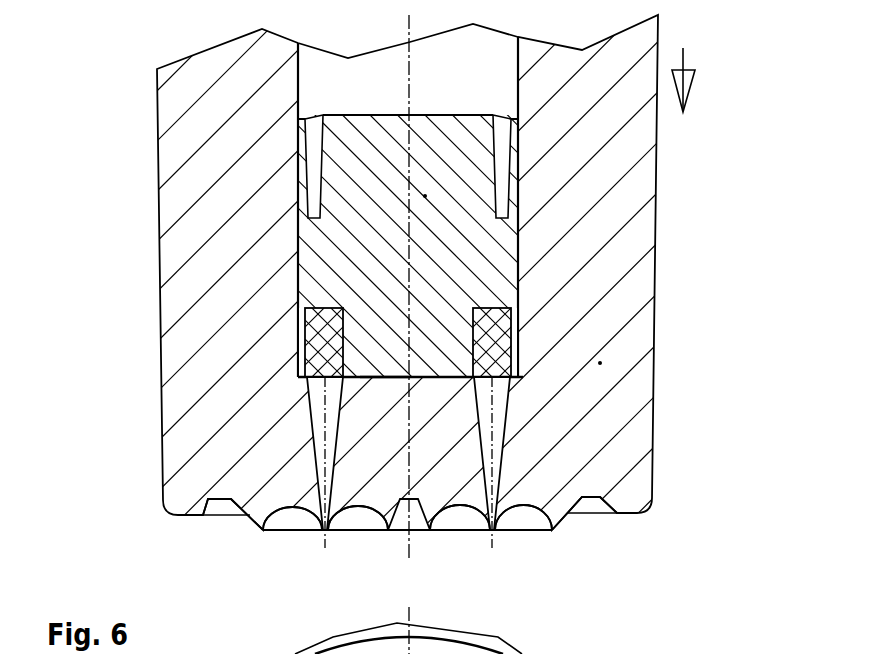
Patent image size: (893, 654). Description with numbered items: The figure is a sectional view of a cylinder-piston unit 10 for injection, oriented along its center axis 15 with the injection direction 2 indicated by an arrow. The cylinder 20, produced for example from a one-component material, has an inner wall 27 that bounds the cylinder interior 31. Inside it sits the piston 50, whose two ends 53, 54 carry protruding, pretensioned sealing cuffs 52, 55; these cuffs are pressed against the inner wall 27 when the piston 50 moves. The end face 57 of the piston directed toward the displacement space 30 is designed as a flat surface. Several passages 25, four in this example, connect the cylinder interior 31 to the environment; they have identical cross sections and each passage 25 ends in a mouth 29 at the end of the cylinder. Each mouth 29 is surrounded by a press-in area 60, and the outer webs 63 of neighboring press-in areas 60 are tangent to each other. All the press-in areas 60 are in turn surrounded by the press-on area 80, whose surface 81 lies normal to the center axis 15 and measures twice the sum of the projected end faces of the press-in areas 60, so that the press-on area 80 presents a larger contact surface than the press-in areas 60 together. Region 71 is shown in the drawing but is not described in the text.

The injection direction 2 is at (683, 65).
The cylinder-piston unit 10 is at (662, 307).
The center axis 15 is at (425, 196).
The cylinder 20 is at (600, 363).
The passages 25 is at (313, 447).
The inner wall 27 is at (443, 85).
The mouth 29 is at (496, 532).
The displacement space 30 is at (523, 377).
The cylinder interior 31 is at (467, 100).
The piston 50 is at (363, 252).
The sealing cuff 52 is at (305, 330).
The end 53 is at (380, 375).
The end 54 is at (358, 113).
The sealing cuff 55 is at (305, 165).
The end face 57 is at (398, 375).
The press-in area 60 is at (292, 532).
The outer web 63 is at (262, 525).
The gate cavity 71 is at (505, 512).
The press-on area 80 is at (205, 512).
The surface 81 is at (570, 497).